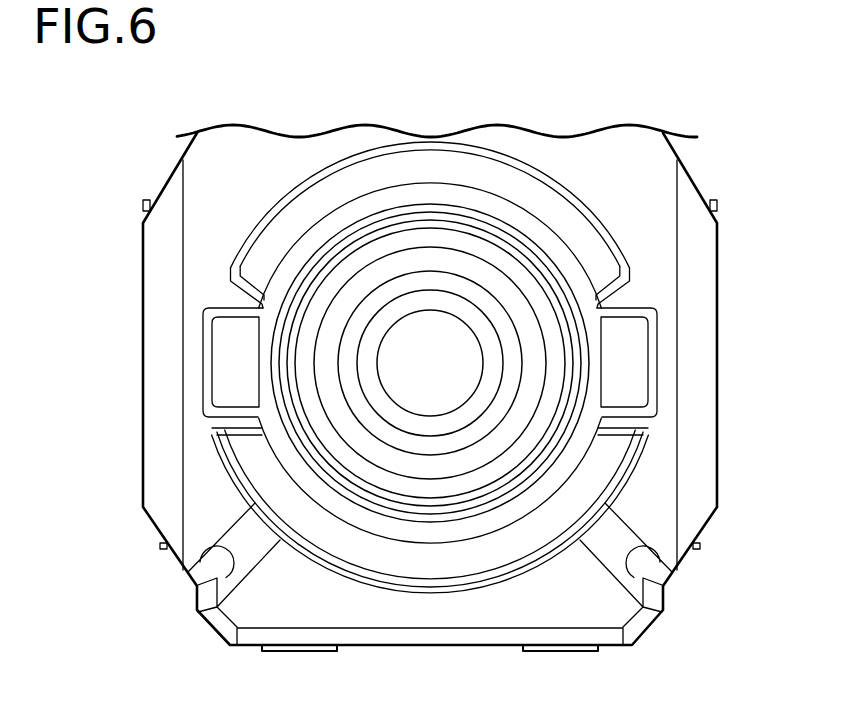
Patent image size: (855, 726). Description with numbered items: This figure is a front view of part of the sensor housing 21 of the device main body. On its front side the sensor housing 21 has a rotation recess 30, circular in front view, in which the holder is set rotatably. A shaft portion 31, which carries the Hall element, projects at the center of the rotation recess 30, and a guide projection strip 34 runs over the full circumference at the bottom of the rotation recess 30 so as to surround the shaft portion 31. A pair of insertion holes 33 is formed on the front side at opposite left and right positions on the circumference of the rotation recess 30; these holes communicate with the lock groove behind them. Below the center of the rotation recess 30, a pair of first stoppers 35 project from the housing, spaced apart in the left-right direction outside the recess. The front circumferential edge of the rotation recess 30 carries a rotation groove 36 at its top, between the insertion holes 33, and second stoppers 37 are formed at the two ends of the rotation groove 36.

The sensor housing 21 is at (723, 246).
The rotation recess 30 is at (452, 526).
The shaft portion 31 is at (483, 413).
The insertion holes 33 is at (240, 306).
The guide projection strip 34 is at (232, 616).
The first stoppers 35 is at (202, 589).
The rotation groove 36 is at (313, 203).
The second stoppers 37 is at (257, 280).